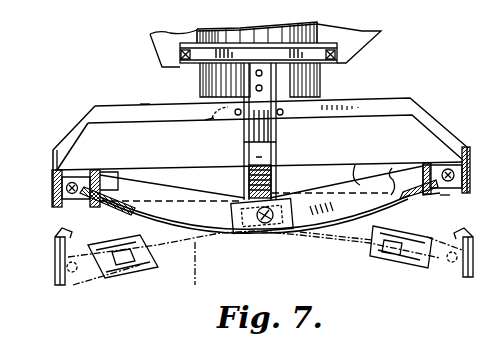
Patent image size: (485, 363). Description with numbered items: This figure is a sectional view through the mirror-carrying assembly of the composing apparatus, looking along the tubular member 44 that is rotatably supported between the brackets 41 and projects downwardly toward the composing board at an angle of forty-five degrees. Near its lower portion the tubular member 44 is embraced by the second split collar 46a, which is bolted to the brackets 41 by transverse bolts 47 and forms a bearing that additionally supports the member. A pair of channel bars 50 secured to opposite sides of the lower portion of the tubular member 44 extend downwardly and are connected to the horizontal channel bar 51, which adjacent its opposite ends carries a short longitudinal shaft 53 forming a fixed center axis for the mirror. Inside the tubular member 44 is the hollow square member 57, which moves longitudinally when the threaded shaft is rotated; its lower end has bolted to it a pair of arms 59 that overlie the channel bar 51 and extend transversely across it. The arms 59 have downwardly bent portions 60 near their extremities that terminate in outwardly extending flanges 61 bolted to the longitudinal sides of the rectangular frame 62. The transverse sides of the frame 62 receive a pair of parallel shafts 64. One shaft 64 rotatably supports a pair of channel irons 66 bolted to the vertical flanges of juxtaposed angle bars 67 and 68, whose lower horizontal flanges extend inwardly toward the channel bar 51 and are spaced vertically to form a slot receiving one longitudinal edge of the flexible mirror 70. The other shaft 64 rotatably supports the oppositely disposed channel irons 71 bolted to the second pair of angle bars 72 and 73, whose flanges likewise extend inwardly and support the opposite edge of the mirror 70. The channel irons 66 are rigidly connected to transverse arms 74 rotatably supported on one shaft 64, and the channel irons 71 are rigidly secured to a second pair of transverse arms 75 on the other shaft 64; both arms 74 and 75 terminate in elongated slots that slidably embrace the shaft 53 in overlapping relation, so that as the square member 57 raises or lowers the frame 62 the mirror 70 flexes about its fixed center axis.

The brackets 41 is at (183, 41).
The tubular member 44 is at (333, 33).
The second split collar 46a is at (238, 45).
The transverse bolts 47 is at (186, 56).
The channel bars 50 is at (273, 131).
The horizontal channel bar 51 is at (279, 191).
The longitudinal shaft 53 is at (259, 233).
The hollow square member 57 is at (211, 118).
The arms 59 is at (146, 104).
The downwardly bent portions 60 is at (73, 135).
The outwardly extending flanges 61 is at (52, 158).
The rectangular frame 62 is at (58, 180).
The shafts 64 is at (78, 208).
The channel irons 66 is at (112, 204).
The angle bar 67 is at (93, 170).
The angle bar 68 is at (104, 178).
The flexible mirror 70 is at (133, 207).
The channel irons 71 is at (449, 194).
The angle bar 72 is at (423, 168).
The angle bar 73 is at (436, 168).
The transverse arms 74 is at (160, 190).
The transverse arms 75 is at (402, 174).